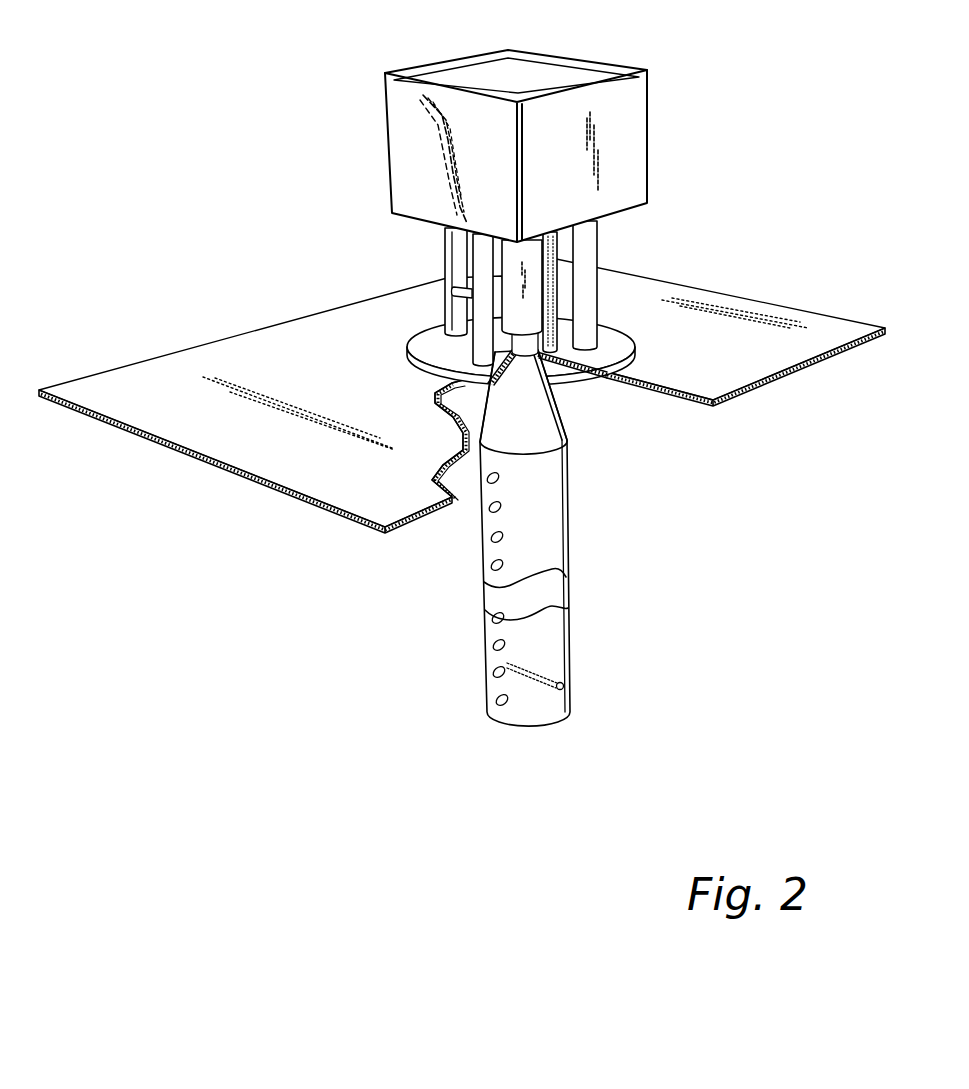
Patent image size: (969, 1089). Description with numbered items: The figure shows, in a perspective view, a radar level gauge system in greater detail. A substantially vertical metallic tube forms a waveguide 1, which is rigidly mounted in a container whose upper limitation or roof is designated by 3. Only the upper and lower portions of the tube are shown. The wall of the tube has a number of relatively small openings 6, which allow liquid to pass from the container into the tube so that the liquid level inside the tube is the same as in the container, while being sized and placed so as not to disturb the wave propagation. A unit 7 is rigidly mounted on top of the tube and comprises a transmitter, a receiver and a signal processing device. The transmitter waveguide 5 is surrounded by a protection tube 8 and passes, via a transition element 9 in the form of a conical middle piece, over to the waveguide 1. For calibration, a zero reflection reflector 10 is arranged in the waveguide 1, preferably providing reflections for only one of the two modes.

The waveguide 1 is at (545, 538).
The roof of the container 3 is at (823, 328).
The transmitter waveguide 5 is at (530, 283).
The openings 6 is at (485, 540).
The unit 7 is at (618, 142).
The protection tube 8 is at (500, 258).
The transition element 9 is at (540, 423).
The zero reflection reflector 10 is at (538, 675).